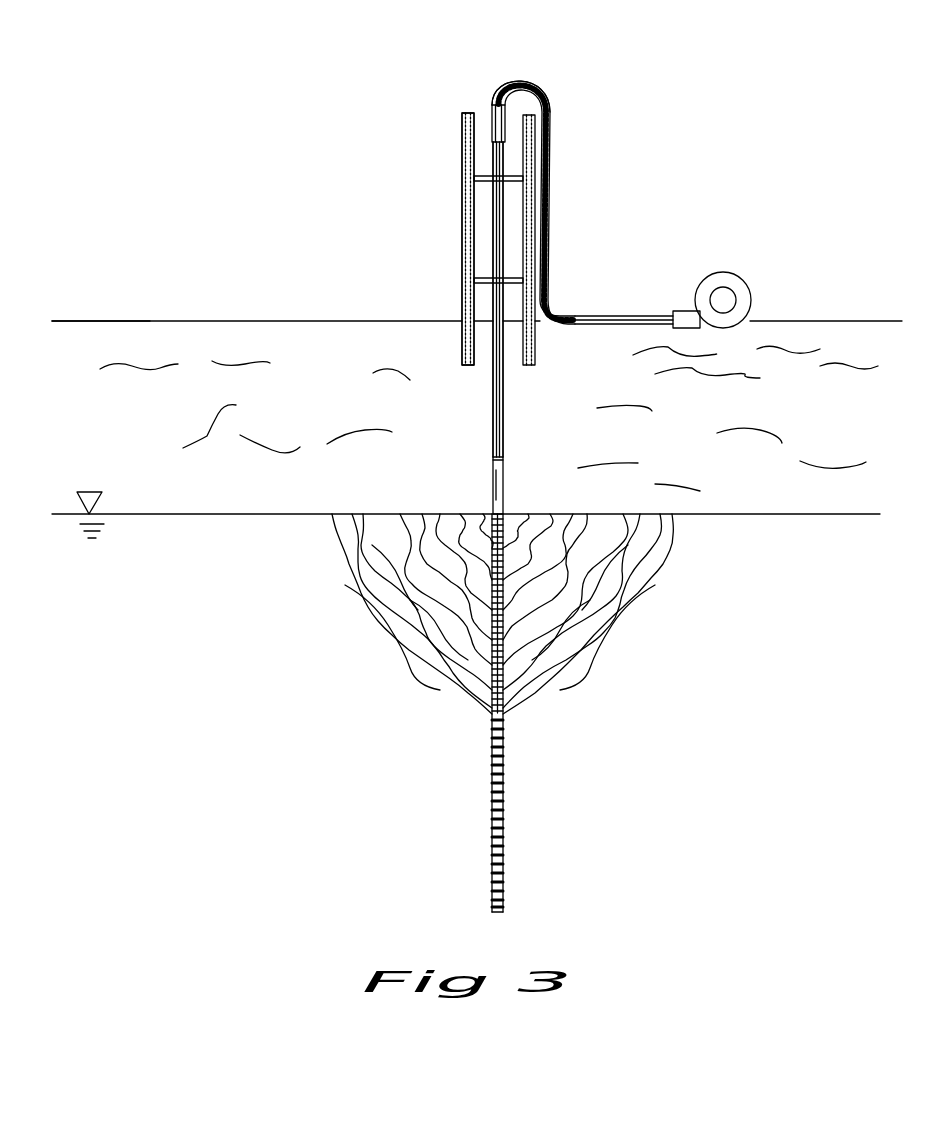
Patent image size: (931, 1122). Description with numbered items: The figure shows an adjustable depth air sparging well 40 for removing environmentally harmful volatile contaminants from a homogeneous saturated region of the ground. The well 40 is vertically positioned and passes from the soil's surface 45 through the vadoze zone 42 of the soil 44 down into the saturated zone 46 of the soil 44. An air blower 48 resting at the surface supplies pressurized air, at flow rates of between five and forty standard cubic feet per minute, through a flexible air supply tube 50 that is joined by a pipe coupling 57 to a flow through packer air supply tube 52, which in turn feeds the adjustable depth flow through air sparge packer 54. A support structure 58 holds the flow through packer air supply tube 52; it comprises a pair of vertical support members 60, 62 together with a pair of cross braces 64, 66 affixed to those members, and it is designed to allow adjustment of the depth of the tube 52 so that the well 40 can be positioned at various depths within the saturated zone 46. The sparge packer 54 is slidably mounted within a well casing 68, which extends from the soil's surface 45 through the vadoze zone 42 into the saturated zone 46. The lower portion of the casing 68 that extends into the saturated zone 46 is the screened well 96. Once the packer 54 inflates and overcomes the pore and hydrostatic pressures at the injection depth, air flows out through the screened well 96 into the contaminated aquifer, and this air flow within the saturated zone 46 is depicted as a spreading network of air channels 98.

The adjustable depth air sparging well 40 is at (438, 318).
The vadoze zone 42 is at (112, 423).
The soil 44 is at (263, 330).
The soil's surface 45 is at (80, 320).
The saturated zone 46 is at (122, 777).
The air blower 48 is at (732, 272).
The flexible air supply tube 50 is at (547, 100).
The flow through packer air supply tube 52 is at (497, 160).
The adjustable depth flow through air sparge packer 54 is at (505, 470).
The pipe coupling 57 is at (492, 123).
The support structure 58 is at (472, 113).
The vertical support member 60 is at (525, 113).
The vertical support member 62 is at (462, 140).
The cross brace 64 is at (507, 176).
The cross brace 66 is at (513, 278).
The well casing 68 is at (493, 383).
The screened well 96 is at (503, 778).
The air channels 98 is at (672, 547).